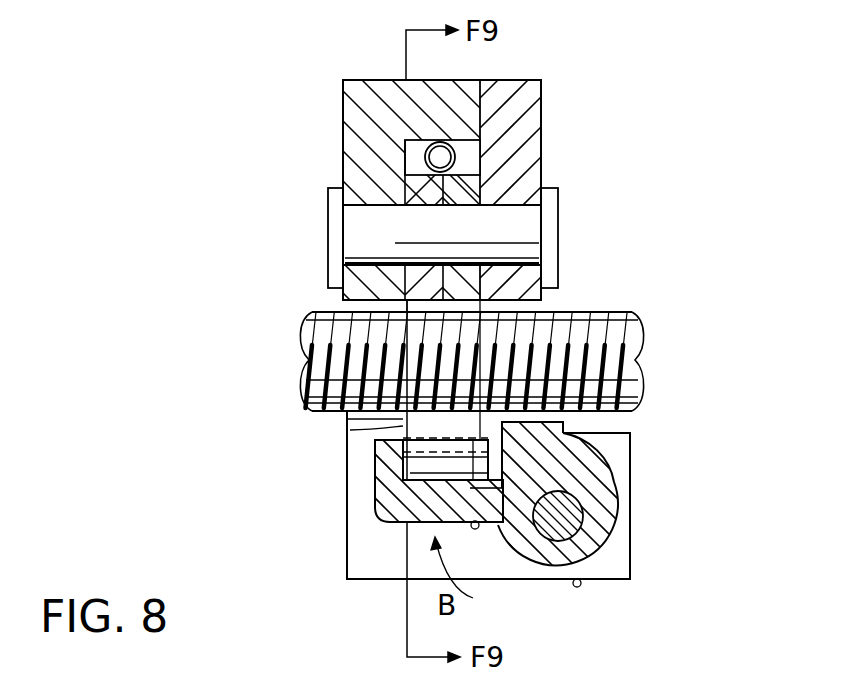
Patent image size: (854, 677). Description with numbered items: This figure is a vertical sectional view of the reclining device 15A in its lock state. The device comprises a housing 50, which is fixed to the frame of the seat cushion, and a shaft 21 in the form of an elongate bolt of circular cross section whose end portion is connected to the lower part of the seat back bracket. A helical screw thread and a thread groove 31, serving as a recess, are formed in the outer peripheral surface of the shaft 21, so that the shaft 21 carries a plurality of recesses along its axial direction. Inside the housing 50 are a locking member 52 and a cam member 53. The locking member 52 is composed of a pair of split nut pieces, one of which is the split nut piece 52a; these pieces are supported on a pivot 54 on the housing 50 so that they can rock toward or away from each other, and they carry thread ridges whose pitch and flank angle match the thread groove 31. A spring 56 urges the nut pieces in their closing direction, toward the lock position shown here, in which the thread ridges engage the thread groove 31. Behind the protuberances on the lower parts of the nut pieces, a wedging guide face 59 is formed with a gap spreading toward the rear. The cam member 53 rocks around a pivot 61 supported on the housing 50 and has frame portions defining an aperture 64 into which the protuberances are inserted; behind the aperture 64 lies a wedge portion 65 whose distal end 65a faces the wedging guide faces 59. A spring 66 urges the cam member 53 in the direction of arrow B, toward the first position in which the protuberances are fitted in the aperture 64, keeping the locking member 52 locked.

The reclining device 15A is at (660, 200).
The housing 50 is at (484, 68).
The locking member 52 is at (415, 188).
The split nut piece 52a is at (403, 432).
The pivot 54 is at (360, 238).
The spring 56 is at (457, 157).
The thread groove 31 is at (336, 310).
The shaft 21 is at (590, 311).
The wedging guide face 59 is at (403, 419).
The wedge portion 65 is at (565, 421).
The distal end of wedge portion 65a is at (420, 462).
The aperture 64 is at (390, 522).
The cam member 53 is at (612, 448).
The pivot 61 is at (570, 515).
The spring 66 is at (580, 587).